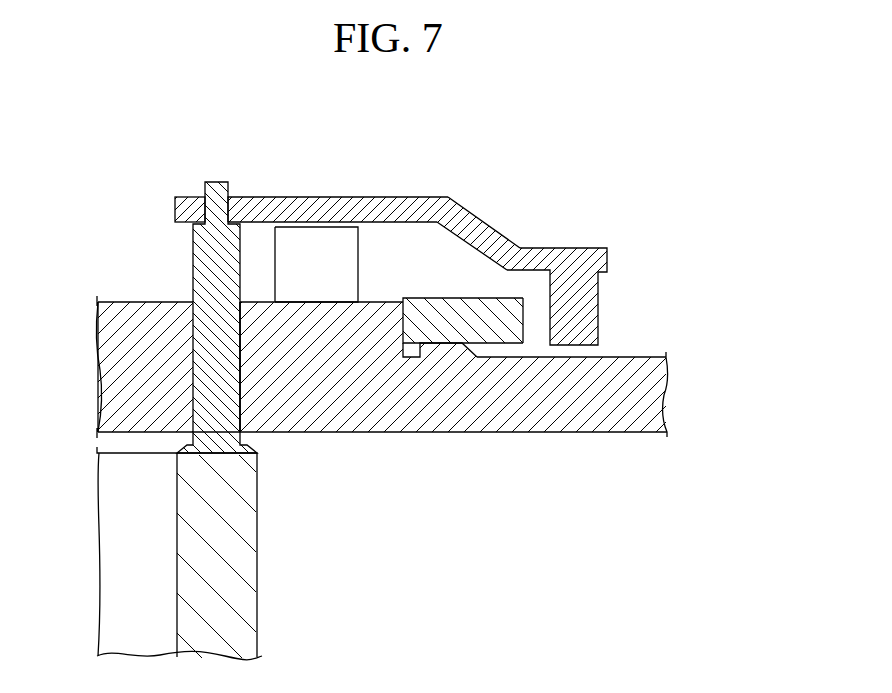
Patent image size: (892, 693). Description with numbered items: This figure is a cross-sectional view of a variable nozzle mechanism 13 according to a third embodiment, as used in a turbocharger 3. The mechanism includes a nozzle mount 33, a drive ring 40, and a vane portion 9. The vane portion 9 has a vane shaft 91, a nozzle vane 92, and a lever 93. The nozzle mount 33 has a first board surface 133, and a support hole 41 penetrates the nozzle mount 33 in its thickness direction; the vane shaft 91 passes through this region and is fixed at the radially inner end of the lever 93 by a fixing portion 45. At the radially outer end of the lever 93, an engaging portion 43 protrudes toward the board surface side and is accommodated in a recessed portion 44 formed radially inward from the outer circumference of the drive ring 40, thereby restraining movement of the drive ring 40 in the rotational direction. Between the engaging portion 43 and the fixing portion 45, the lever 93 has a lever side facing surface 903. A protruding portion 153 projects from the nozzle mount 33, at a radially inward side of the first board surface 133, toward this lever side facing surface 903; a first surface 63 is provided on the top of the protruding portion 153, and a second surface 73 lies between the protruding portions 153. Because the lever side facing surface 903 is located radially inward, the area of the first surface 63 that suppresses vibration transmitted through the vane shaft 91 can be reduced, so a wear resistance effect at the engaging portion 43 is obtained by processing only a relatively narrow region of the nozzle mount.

The turbocharger 3 is at (713, 162).
The vane portion 9 is at (527, 196).
The variable nozzle mechanism 13 is at (621, 226).
The nozzle mount 33 is at (383, 317).
The drive ring 40 is at (470, 297).
The support hole 41 is at (250, 404).
The engaging portion 43 is at (591, 239).
The recessed portion 44 is at (534, 305).
The fixing portion 45 is at (188, 200).
The first surface 63 is at (290, 227).
The second surface 73 is at (322, 302).
The vane shaft 91 is at (200, 237).
The nozzle vane 92 is at (257, 573).
The lever 93 is at (250, 197).
The first board surface 133 is at (643, 357).
The protruding portion 153 is at (275, 268).
The lever side facing surface 903 is at (320, 235).